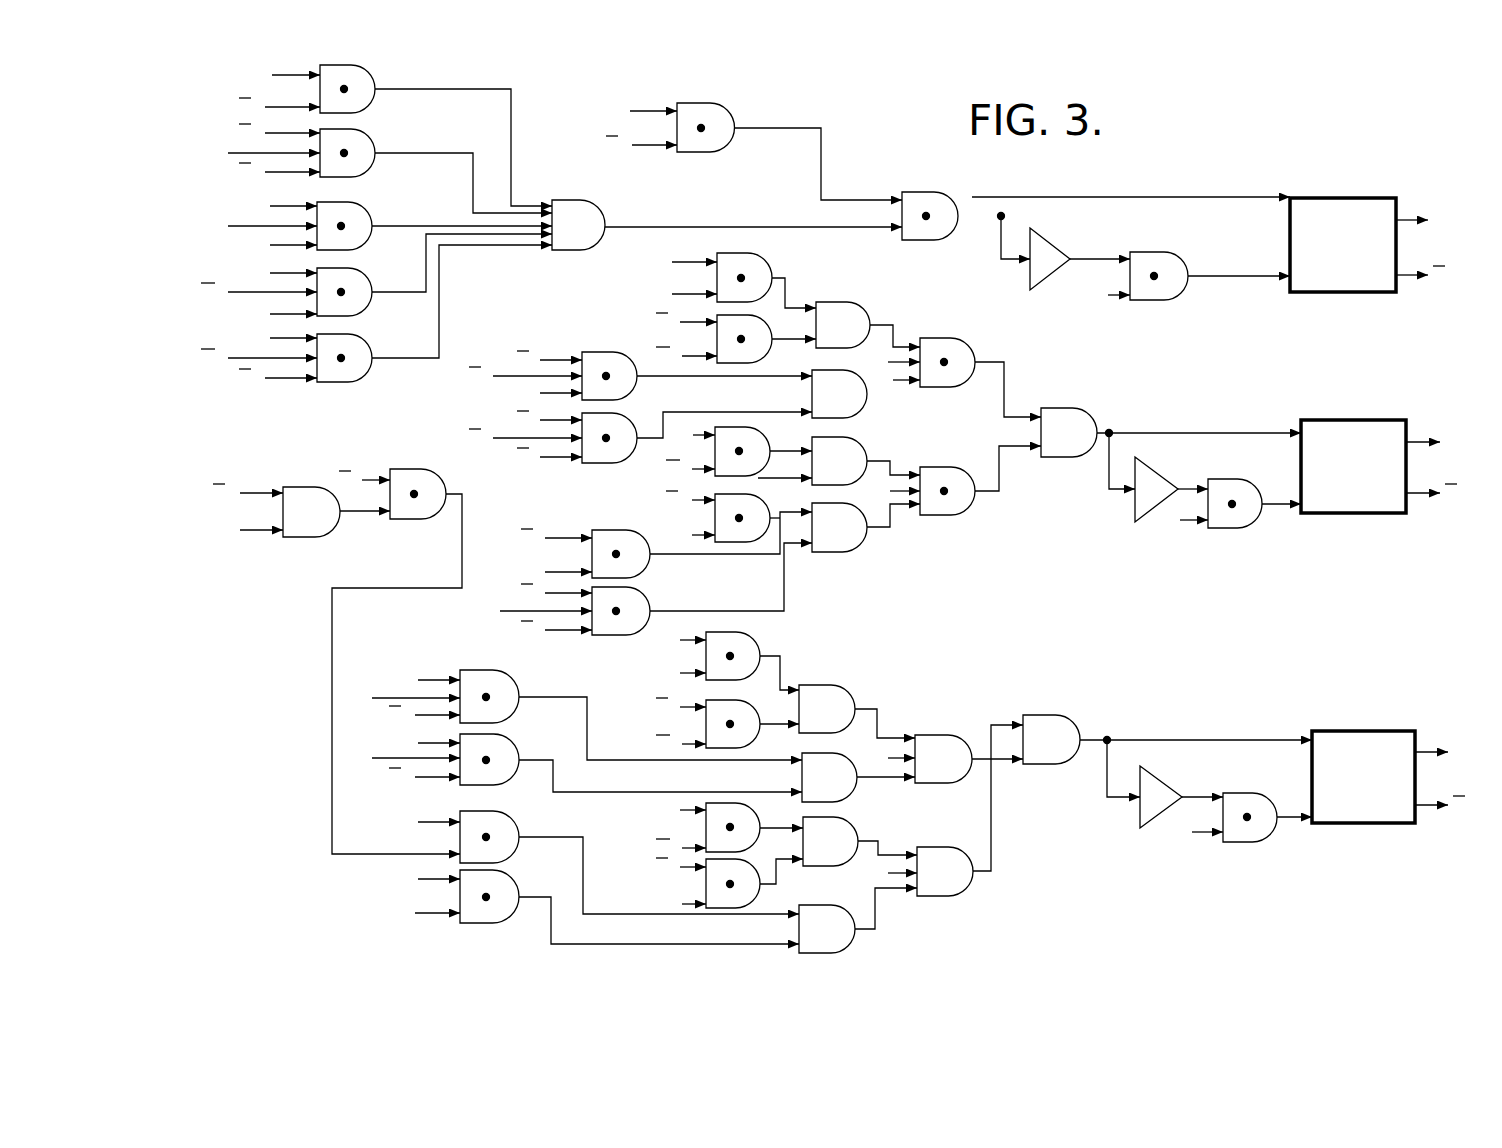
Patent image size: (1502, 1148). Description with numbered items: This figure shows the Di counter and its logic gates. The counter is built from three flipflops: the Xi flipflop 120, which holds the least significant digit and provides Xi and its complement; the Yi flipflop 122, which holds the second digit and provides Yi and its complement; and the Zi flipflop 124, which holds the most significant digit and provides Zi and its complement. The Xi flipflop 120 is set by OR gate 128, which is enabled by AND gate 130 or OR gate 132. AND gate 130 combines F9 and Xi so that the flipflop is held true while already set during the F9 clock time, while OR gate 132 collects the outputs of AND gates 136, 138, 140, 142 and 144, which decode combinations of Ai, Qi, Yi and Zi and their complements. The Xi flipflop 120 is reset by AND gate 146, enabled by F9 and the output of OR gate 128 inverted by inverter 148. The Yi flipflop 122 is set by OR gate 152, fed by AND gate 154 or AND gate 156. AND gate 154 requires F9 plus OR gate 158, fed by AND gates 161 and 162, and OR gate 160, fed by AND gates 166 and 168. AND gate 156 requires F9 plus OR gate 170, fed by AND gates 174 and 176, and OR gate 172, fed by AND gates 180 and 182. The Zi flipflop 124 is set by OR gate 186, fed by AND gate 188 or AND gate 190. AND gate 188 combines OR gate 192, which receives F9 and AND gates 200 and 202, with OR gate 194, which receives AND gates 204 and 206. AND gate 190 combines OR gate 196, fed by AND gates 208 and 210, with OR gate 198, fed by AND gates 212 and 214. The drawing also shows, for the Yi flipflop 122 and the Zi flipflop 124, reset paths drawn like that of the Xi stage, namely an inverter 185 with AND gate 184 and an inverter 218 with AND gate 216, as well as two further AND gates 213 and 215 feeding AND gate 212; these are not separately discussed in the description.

The Xi flipflop 120 is at (1396, 199).
The Yi flipflop 122 is at (1381, 466).
The Zi flipflop 124 is at (1393, 731).
The OR gate 128 is at (950, 199).
The AND gate 130 is at (722, 103).
The OR gate 132 is at (599, 206).
The AND gate 136 is at (376, 78).
The AND gate 138 is at (366, 130).
The AND gate 140 is at (366, 202).
The AND gate 142 is at (366, 268).
The AND gate 144 is at (366, 334).
The AND gate 146 is at (1176, 252).
The inverter 148 is at (1036, 291).
The OR gate 152 is at (1085, 410).
The AND gate 154 is at (962, 340).
The AND gate 156 is at (955, 516).
The OR gate 158 is at (850, 303).
The OR gate 160 is at (867, 407).
The AND gate 161 is at (760, 254).
The AND gate 162 is at (765, 354).
The AND gate 166 is at (625, 352).
The AND gate 168 is at (625, 413).
The OR gate 170 is at (858, 440).
The OR gate 172 is at (858, 546).
The AND gate 174 is at (760, 432).
The AND gate 176 is at (760, 498).
The AND gate 180 is at (638, 530).
The AND gate 182 is at (610, 635).
The AND gate 184 is at (1247, 480).
The inverter 185 is at (1150, 470).
The OR gate 186 is at (1075, 722).
The AND gate 188 is at (972, 772).
The AND gate 190 is at (975, 888).
The OR gate 192 is at (852, 690).
The OR gate 194 is at (857, 791).
The OR gate 196 is at (855, 832).
The OR gate 198 is at (857, 937).
The AND gate 200 is at (762, 641).
The AND gate 202 is at (756, 737).
The AND gate 204 is at (513, 676).
The AND gate 206 is at (513, 740).
The AND gate 208 is at (752, 825).
The AND gate 210 is at (762, 893).
The AND gate 212 is at (510, 800).
The AND gate 213 is at (430, 469).
The AND gate 214 is at (513, 878).
The AND gate 215 is at (330, 535).
The AND gate 216 is at (1262, 840).
The inverter 218 is at (1143, 829).